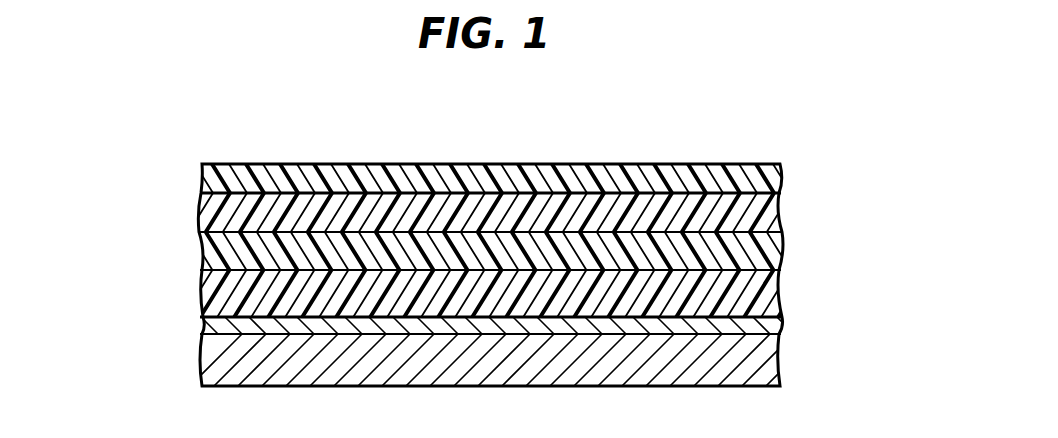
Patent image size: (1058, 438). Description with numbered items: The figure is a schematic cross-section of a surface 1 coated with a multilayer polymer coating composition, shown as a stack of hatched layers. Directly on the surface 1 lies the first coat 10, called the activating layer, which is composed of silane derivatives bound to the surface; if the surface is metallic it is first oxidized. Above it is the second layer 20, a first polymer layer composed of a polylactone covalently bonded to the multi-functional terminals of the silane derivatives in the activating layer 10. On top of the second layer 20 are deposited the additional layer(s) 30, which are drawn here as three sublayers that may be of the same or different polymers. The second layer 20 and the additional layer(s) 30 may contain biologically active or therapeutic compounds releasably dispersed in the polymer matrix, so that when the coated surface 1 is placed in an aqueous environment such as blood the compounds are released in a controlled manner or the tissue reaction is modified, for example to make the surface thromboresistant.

The surface 1 is at (781, 367).
The first coat (activating layer) 10 is at (781, 328).
The second layer (first polymer layer) 20 is at (781, 292).
The additional layer(s) 30 is at (810, 223).